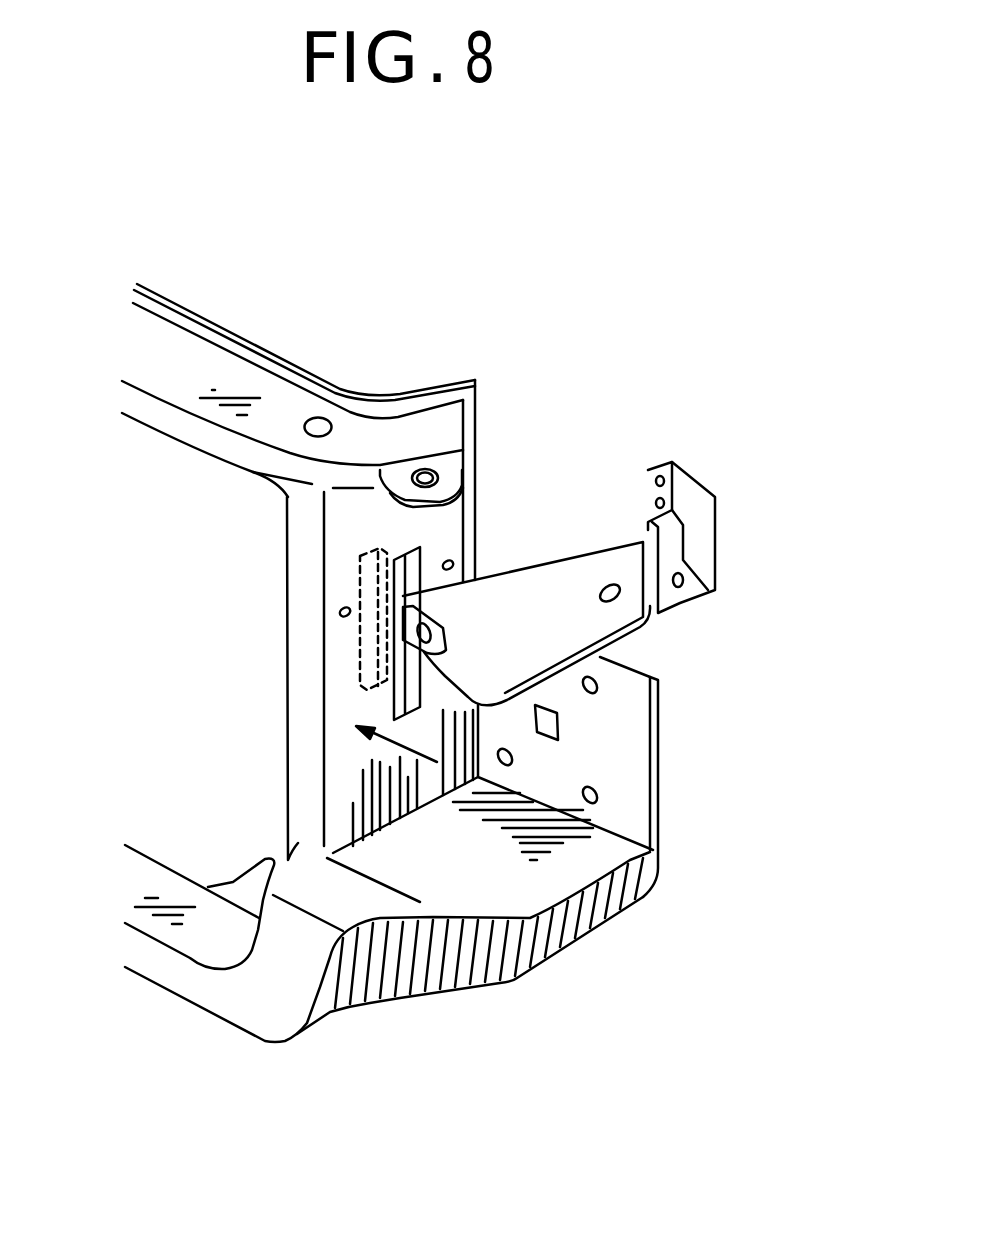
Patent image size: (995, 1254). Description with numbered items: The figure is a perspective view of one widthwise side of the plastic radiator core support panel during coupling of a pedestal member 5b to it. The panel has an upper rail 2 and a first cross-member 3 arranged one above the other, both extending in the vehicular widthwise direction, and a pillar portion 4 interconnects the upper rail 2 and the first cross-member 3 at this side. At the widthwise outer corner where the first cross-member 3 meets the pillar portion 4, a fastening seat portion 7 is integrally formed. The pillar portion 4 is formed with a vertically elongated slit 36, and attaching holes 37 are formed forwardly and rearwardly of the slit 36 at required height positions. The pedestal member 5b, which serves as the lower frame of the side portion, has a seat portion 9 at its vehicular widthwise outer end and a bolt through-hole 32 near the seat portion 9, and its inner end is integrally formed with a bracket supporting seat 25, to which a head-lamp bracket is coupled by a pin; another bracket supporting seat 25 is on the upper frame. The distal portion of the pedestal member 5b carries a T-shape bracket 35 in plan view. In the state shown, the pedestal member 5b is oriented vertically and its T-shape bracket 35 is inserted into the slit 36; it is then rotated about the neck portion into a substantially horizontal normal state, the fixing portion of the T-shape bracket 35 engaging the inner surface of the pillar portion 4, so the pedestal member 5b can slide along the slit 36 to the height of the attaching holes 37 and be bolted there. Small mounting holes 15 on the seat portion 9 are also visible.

The upper rail 2 is at (222, 367).
The first cross-member 3 is at (190, 942).
The pillar portion 4 is at (333, 820).
The pedestal member 5b is at (569, 534).
The fastening seat portion 7 is at (630, 750).
The seat portion 9 is at (700, 532).
The mounting holes 15 is at (668, 463).
The bracket supporting seat 25 is at (409, 468).
The bolt through-hole 32 is at (618, 598).
The T-shape bracket 35 is at (357, 657).
The slit 36 is at (377, 703).
The attaching hole 37 is at (455, 561).